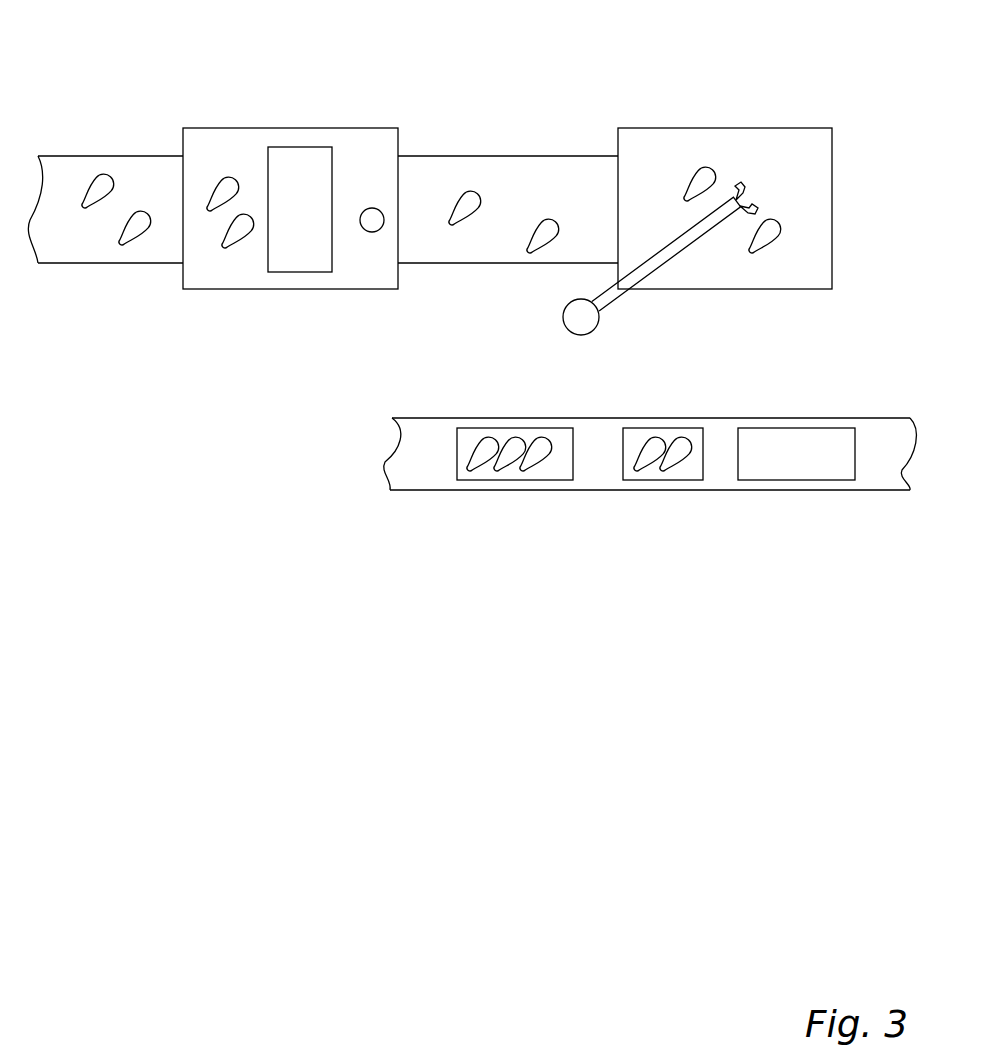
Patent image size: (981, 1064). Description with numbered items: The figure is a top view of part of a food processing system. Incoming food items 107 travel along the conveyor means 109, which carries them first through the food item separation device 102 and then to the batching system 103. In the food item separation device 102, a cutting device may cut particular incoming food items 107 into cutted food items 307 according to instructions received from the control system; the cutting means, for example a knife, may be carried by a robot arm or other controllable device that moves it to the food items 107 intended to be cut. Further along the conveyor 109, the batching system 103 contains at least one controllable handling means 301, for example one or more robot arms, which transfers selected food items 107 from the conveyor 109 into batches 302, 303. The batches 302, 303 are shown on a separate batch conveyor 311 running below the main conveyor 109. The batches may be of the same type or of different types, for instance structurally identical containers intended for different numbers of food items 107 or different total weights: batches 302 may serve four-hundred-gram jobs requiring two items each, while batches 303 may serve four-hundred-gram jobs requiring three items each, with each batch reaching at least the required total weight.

The food item separation device 102 is at (361, 128).
The batching system 103 is at (640, 128).
The food items 107 is at (105, 172).
The conveyor means 109 is at (450, 243).
The controllable handling means 301 is at (725, 205).
The batch 302 is at (296, 147).
The batch 303 is at (680, 480).
The cutted food item 307 is at (372, 232).
The batch conveyor 311 is at (435, 430).